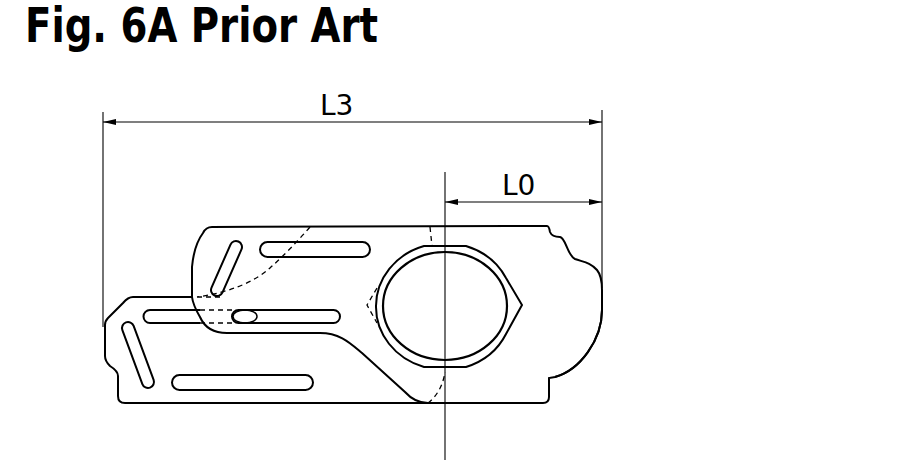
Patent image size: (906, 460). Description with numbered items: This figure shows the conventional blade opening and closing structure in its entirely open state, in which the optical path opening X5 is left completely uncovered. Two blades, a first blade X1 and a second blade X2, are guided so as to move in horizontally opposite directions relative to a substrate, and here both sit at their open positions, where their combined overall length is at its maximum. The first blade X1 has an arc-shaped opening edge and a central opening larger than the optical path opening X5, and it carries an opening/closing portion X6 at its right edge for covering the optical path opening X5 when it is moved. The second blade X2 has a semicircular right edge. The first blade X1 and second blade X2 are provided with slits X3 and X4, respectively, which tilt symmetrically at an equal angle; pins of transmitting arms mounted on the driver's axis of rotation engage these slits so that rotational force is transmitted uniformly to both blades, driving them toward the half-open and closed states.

The first blade X1 is at (247, 226).
The second blade X2 is at (172, 393).
The slit X3 is at (222, 272).
The slit X4 is at (135, 353).
The optical path opening X5 is at (410, 273).
The opening/closing portion X6 is at (598, 300).